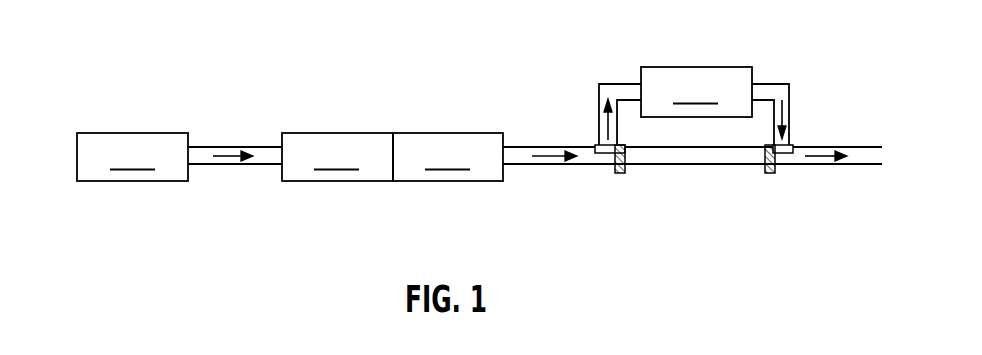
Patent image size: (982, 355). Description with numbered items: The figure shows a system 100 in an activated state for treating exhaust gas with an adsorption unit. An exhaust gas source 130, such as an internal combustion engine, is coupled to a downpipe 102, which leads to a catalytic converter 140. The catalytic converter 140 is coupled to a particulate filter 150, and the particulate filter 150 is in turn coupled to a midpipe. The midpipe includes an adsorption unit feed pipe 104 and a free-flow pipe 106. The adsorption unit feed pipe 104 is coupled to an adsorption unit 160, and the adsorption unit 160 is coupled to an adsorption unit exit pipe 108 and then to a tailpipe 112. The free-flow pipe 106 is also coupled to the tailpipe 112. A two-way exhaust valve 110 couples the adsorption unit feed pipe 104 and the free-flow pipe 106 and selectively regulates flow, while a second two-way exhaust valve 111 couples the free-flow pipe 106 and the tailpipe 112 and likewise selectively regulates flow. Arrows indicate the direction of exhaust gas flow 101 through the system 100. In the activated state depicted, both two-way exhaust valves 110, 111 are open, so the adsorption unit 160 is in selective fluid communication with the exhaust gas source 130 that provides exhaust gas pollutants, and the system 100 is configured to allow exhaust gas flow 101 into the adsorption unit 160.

The system 100 is at (132, 66).
The exhaust gas flow 101 is at (237, 163).
The downpipe 102 is at (208, 146).
The adsorption unit feed pipe 104 is at (599, 90).
The free-flow pipe 106 is at (720, 166).
The adsorption unit exit pipe 108 is at (780, 84).
The two-way exhaust valve 110 is at (618, 175).
The two-way exhaust valve 111 is at (772, 174).
The tailpipe 112 is at (832, 146).
The exhaust gas source 130 is at (132, 157).
The catalytic converter 140 is at (337, 157).
The particulate filter 150 is at (448, 157).
The adsorption unit 160 is at (696, 92).